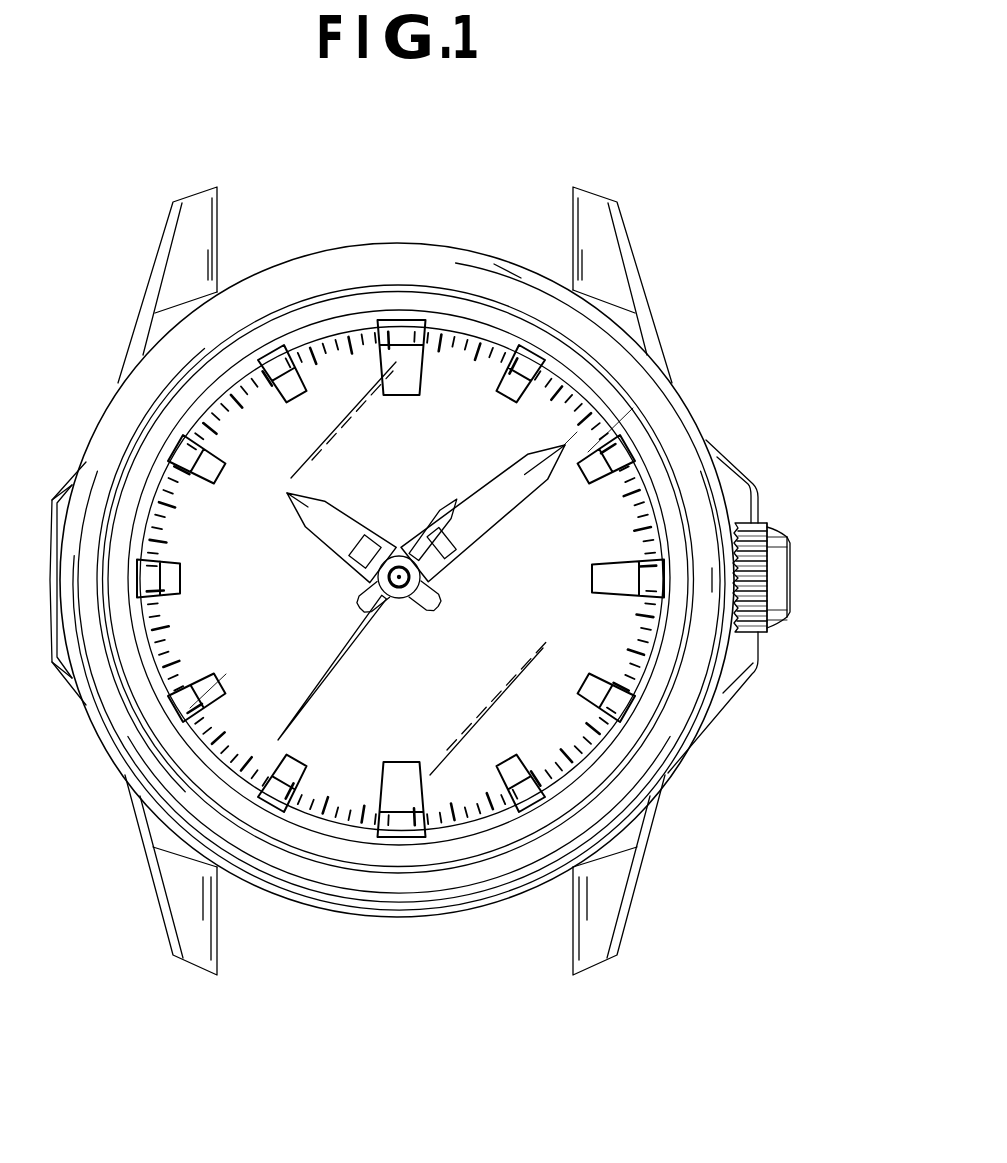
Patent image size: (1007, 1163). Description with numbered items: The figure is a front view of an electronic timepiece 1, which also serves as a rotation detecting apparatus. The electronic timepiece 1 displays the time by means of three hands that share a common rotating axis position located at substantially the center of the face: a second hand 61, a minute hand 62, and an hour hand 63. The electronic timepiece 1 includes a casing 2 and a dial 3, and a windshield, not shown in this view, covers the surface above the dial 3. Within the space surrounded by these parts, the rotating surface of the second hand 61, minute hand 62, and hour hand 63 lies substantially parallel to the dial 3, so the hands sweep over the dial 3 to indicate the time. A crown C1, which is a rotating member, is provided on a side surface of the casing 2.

The electronic timepiece 1 is at (718, 118).
The casing 2 is at (459, 268).
The dial 3 is at (592, 540).
The second hand 61 is at (277, 741).
The minute hand 62 is at (567, 440).
The hour hand 63 is at (288, 492).
The crown C1 is at (778, 540).